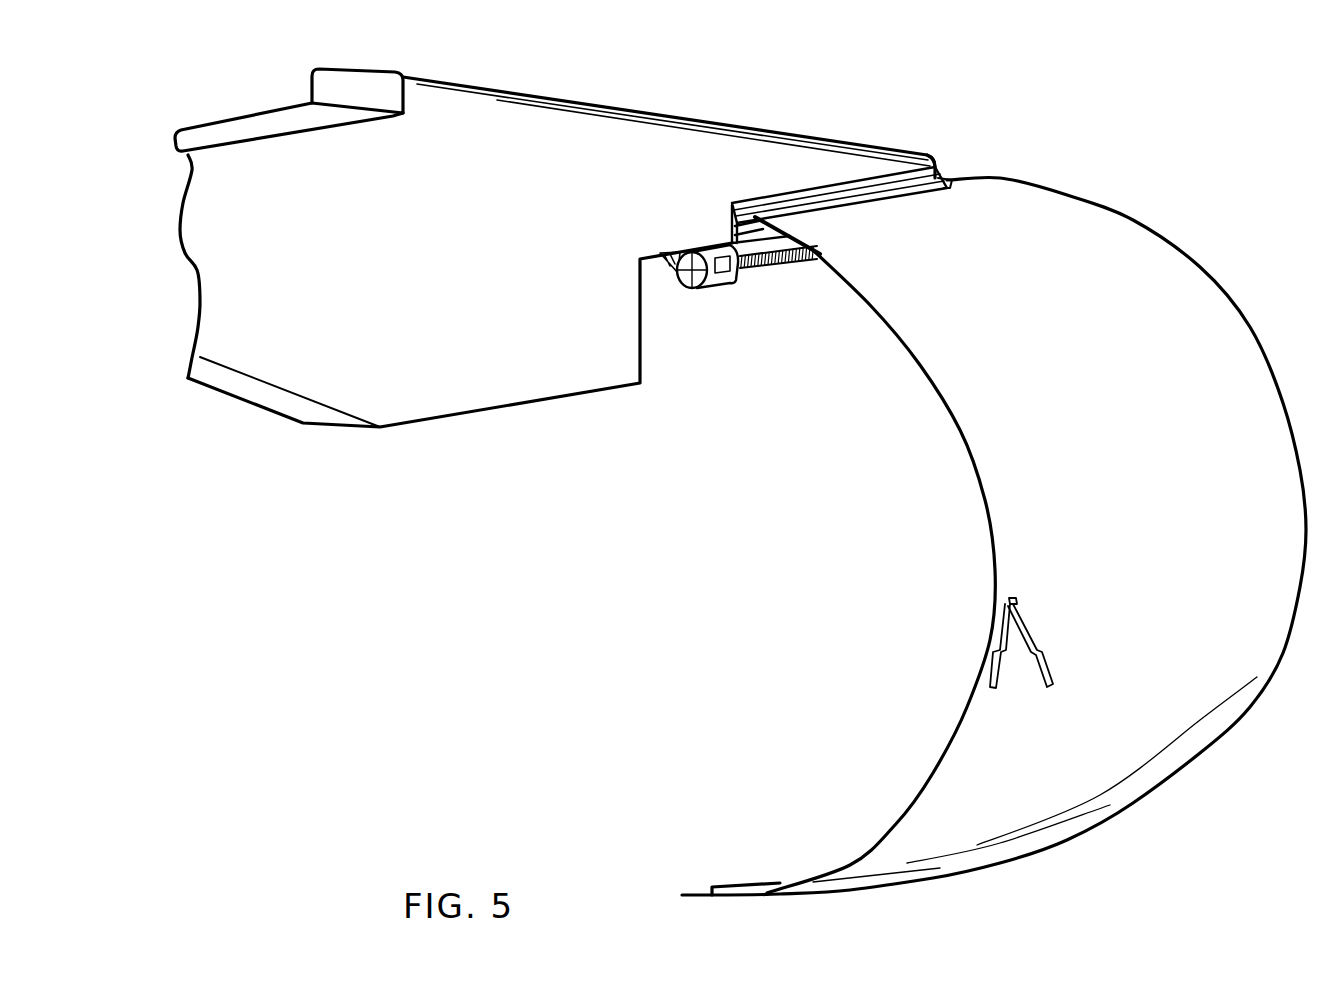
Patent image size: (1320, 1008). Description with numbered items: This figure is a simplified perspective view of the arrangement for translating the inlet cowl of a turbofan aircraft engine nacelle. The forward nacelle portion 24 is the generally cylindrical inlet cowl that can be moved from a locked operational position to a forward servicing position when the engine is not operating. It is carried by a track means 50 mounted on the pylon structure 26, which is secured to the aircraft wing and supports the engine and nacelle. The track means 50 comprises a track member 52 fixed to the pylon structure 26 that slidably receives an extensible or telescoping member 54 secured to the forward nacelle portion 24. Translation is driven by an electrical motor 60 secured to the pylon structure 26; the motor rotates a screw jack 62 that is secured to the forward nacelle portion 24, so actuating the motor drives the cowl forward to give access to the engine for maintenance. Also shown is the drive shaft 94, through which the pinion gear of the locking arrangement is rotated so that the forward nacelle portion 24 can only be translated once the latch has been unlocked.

The forward nacelle portion 24 is at (1163, 233).
The pylon structure 26 is at (658, 113).
The track means 50 is at (817, 183).
The track member 52 is at (920, 153).
The extensible member 54 is at (953, 175).
The electrical motor 60 is at (720, 290).
The screw jack 62 is at (797, 257).
The drive shaft 94 is at (1047, 657).